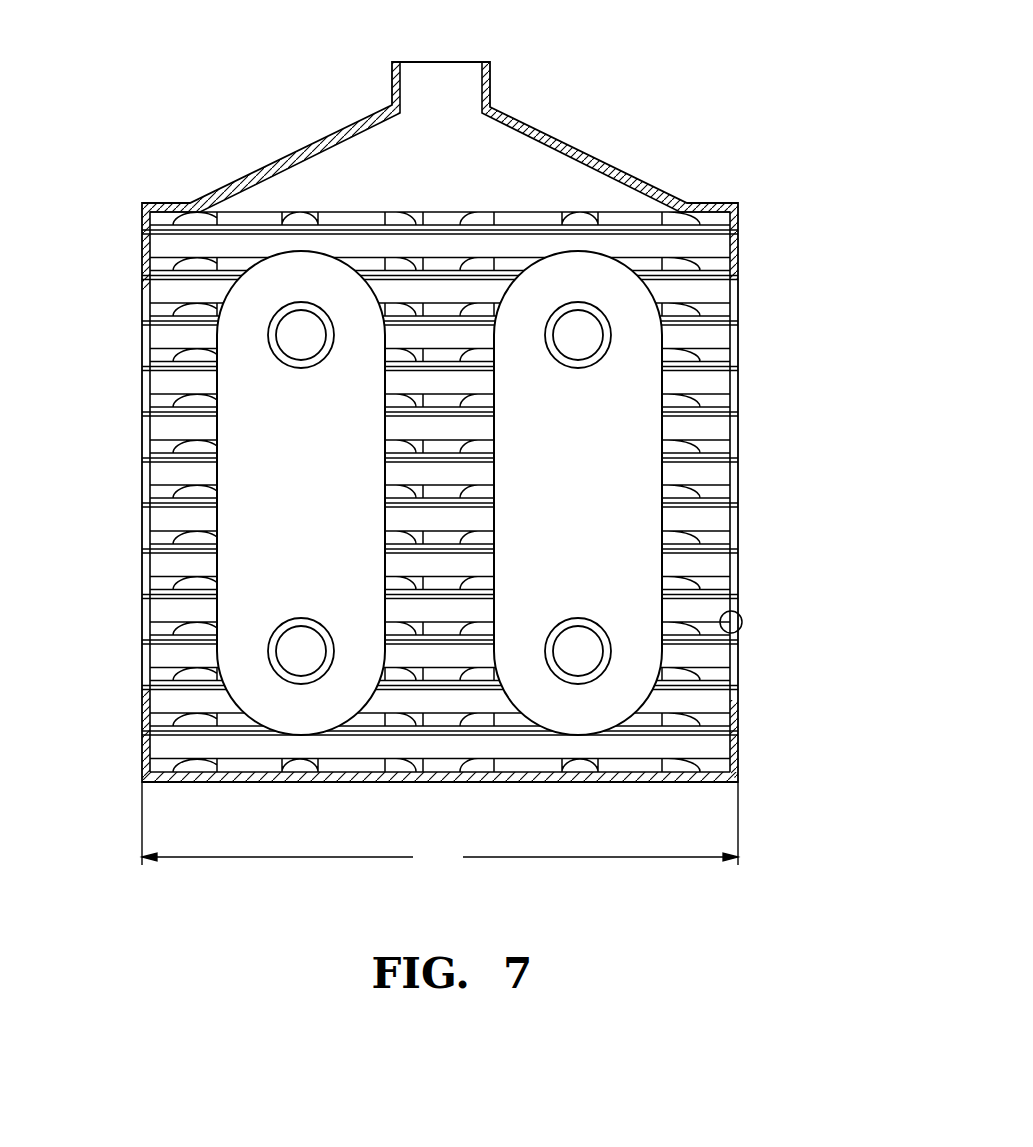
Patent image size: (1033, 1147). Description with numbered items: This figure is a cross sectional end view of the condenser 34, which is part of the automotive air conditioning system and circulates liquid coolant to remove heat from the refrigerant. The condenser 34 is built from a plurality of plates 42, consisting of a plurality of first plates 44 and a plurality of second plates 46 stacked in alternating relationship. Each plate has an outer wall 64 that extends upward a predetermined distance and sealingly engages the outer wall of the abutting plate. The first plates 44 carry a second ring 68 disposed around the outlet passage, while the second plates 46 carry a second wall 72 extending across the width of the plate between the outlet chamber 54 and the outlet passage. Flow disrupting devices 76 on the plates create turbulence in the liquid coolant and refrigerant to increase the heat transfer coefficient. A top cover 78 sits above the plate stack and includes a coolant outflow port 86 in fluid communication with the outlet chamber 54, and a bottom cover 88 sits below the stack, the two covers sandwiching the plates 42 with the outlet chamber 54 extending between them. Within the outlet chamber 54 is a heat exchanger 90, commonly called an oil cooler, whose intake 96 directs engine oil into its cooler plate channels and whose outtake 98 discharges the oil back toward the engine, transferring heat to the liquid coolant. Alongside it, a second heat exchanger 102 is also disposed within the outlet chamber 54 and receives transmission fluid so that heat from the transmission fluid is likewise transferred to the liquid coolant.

The condenser 34 is at (785, 103).
The plurality of plates 42 is at (750, 420).
The plurality of first plates 44 is at (740, 267).
The plurality of second plates 46 is at (740, 335).
The outlet chamber 54 is at (742, 636).
The outer wall 64 is at (142, 334).
The second ring 68 is at (260, 222).
The second wall 72 is at (182, 270).
The flow disrupting devices 76 is at (482, 720).
The top cover 78 is at (175, 197).
The coolant outflow port 86 is at (490, 77).
The bottom cover 88 is at (704, 783).
The heat exchanger 90 is at (633, 516).
The intake 96 is at (267, 642).
The outtake 98 is at (268, 326).
The second heat exchanger 102 is at (267, 515).